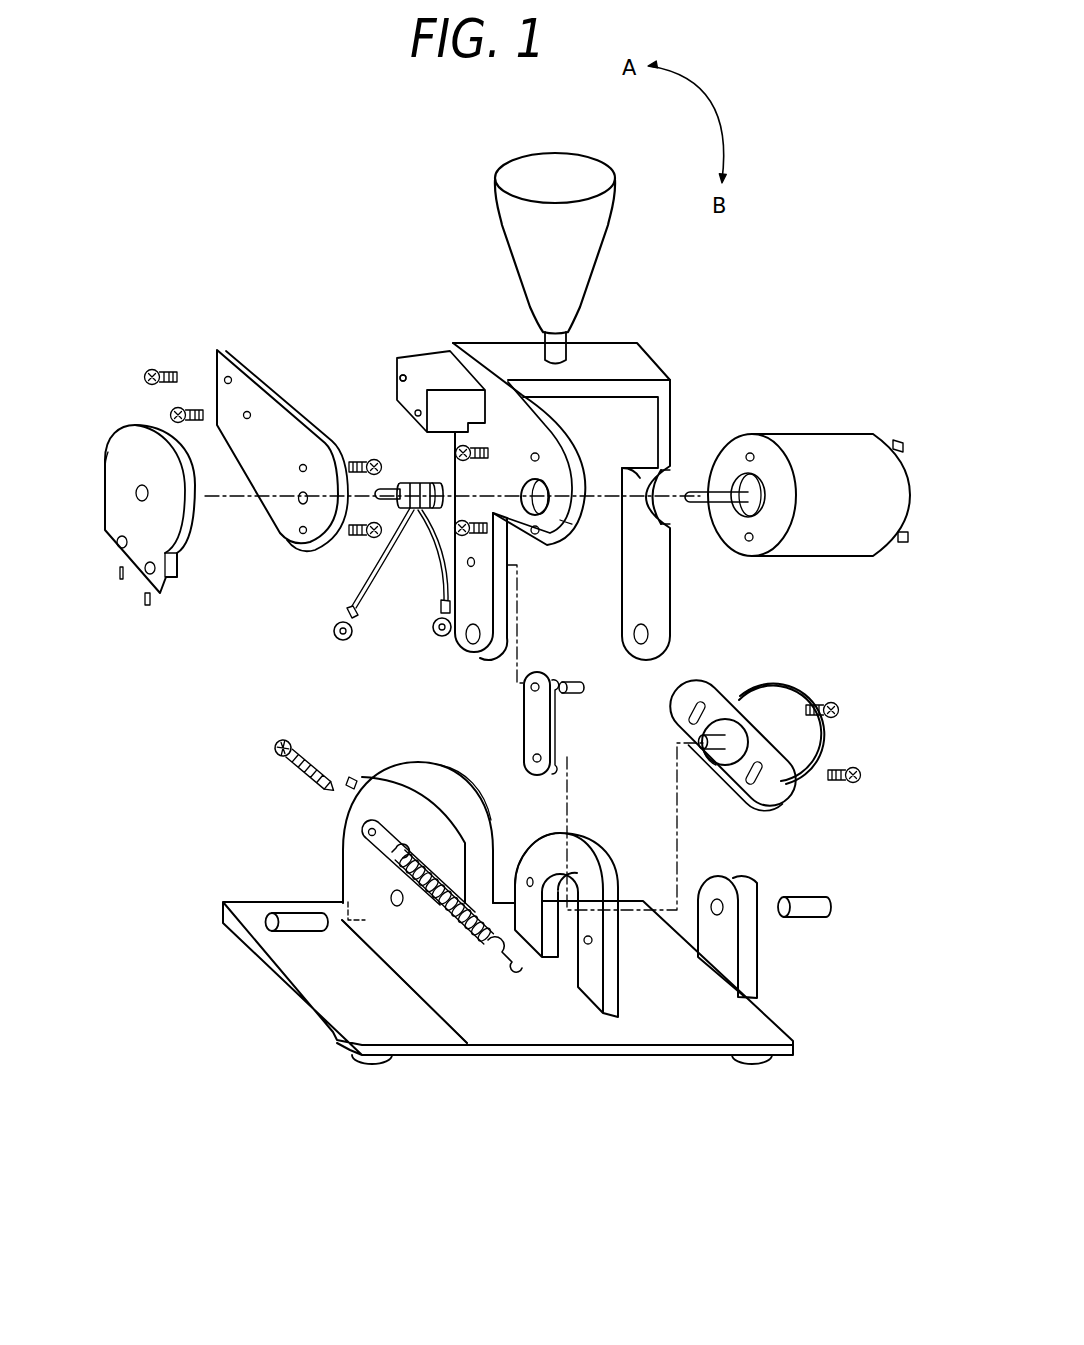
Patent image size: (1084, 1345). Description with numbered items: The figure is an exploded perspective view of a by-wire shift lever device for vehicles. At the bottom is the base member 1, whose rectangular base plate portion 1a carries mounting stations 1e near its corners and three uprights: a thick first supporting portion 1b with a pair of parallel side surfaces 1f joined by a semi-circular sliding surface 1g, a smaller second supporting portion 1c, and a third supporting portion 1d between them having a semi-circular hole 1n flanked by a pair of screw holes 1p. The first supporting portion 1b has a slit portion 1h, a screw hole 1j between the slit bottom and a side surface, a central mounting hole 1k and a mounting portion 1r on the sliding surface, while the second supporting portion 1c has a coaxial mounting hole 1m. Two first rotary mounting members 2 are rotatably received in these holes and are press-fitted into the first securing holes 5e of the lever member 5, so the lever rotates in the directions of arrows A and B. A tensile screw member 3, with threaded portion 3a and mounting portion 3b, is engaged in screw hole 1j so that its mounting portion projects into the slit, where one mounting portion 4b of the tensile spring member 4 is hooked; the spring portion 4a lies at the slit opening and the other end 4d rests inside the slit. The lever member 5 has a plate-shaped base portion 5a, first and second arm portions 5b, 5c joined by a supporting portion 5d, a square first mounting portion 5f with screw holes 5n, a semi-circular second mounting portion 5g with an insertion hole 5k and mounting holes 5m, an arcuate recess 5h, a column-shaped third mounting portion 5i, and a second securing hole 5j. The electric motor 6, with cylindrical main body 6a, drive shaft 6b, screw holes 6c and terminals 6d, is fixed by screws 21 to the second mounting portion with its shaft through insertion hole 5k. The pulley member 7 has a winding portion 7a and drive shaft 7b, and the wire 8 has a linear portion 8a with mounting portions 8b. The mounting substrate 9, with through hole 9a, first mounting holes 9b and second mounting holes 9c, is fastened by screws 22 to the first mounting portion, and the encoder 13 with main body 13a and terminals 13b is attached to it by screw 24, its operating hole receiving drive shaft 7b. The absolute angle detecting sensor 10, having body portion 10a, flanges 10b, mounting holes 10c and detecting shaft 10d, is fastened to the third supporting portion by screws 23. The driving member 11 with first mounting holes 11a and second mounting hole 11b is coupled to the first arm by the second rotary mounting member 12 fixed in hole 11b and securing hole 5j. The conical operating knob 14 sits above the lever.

The base member 1 is at (547, 961).
The base plate portion 1a is at (660, 1056).
The first supporting portion 1b is at (407, 976).
The second supporting portion 1c is at (757, 918).
The third supporting portion 1d is at (598, 901).
The mounting station 1e is at (365, 1060).
The side surfaces 1f is at (368, 879).
The sliding surface 1g is at (462, 794).
The slit portion 1h is at (343, 886).
The screw hole 1j is at (368, 832).
The mounting hole 1k is at (392, 907).
The mounting hole 1m is at (712, 897).
The hole 1n is at (583, 858).
The screw holes 1p is at (592, 945).
The mounting portion 1r is at (354, 777).
The first rotary mounting member 2 is at (295, 933).
The tensile screw member 3 is at (269, 776).
The threaded portion 3a is at (308, 769).
The mounting portion 3b is at (330, 787).
The tensile spring member 4 is at (468, 980).
The spring portion 4a is at (432, 905).
The mounting portions 4b is at (392, 855).
The spring hook 4d is at (522, 972).
The lever member 5 is at (543, 490).
The base portion 5a is at (613, 413).
The first arm portion 5b is at (460, 473).
The second arm portion 5c is at (676, 434).
The supporting portion 5d is at (620, 392).
The first securing holes 5e is at (468, 640).
The first mounting portion 5f is at (430, 365).
The second mounting portion 5g is at (560, 520).
The arcuate recess 5h is at (666, 520).
The third mounting portion 5i is at (543, 337).
The second securing hole 5j is at (476, 562).
The insertion hole 5k is at (548, 497).
The mounting holes 5m is at (540, 456).
The screw holes 5n is at (398, 377).
The electric motor 6 is at (802, 474).
The main body 6a is at (860, 540).
The drive shaft 6b is at (700, 492).
The screw holes 6c is at (752, 452).
The terminals 6d is at (897, 443).
The pulley member 7 is at (409, 529).
The winding portion 7a is at (440, 481).
The drive shaft 7b is at (392, 500).
The wire 8 is at (381, 574).
The linear portion 8a is at (432, 537).
The mounting portions 8b is at (355, 628).
The mounting substrate 9 is at (289, 434).
The through hole 9a is at (300, 503).
The first mounting holes 9b is at (306, 463).
The second mounting holes 9c is at (251, 412).
The absolute angle detecting sensor 10 is at (758, 747).
The body portion 10a is at (762, 708).
The flanges 10b is at (766, 802).
The mounting holes 10c is at (752, 782).
The detecting shaft 10d is at (720, 748).
The driving member 11 is at (543, 748).
The first mounting holes 11a is at (533, 768).
The second mounting hole 11b is at (530, 688).
The second rotary mounting member 12 is at (575, 694).
The encoder 13 is at (121, 548).
The main body 13a is at (108, 466).
The terminals 13b is at (146, 606).
The operating knob 14 is at (495, 190).
The screws 21 is at (480, 450).
The screw 22 is at (152, 368).
The screw 23 is at (860, 765).
The screw 24 is at (368, 458).